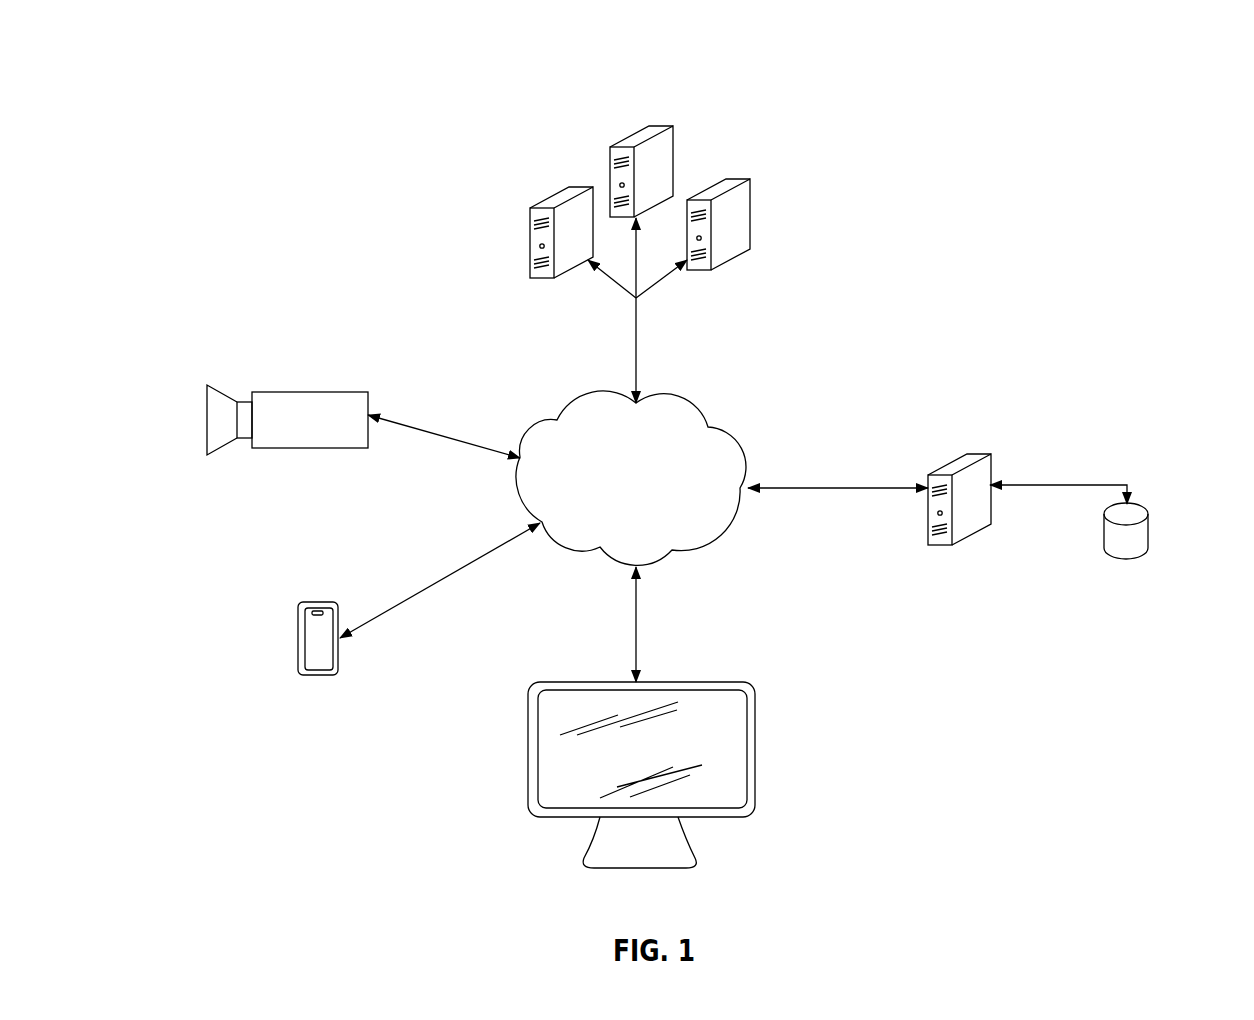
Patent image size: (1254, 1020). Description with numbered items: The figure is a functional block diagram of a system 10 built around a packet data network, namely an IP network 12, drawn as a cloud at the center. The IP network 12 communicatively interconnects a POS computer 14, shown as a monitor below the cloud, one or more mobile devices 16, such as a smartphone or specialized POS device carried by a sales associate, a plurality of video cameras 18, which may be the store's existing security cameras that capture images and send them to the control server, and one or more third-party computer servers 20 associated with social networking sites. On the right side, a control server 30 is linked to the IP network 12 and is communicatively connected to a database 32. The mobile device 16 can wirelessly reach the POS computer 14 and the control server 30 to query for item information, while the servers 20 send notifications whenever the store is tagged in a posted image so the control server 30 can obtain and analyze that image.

The system 10 is at (191, 107).
The IP network 12 is at (624, 520).
The POS computer 14 is at (723, 682).
The mobile device 16 is at (328, 602).
The video camera 18 is at (265, 392).
The third-party computer server 20 is at (570, 110).
The control server 30 is at (978, 440).
The database 32 is at (1149, 514).